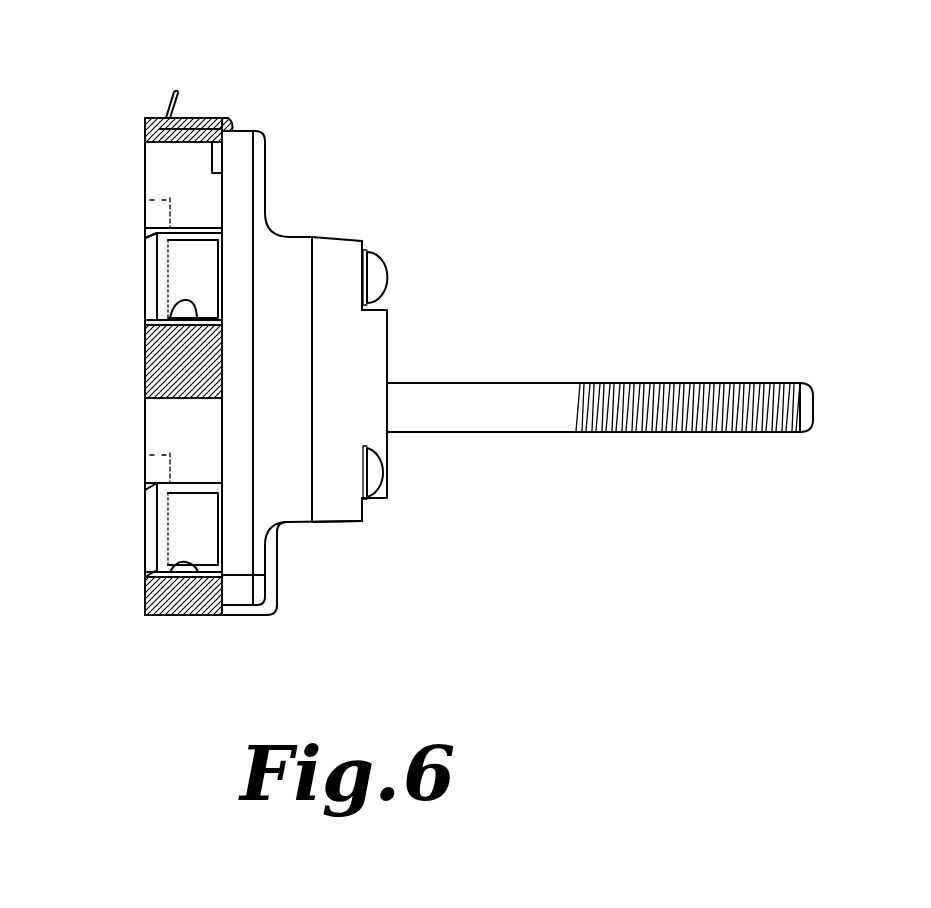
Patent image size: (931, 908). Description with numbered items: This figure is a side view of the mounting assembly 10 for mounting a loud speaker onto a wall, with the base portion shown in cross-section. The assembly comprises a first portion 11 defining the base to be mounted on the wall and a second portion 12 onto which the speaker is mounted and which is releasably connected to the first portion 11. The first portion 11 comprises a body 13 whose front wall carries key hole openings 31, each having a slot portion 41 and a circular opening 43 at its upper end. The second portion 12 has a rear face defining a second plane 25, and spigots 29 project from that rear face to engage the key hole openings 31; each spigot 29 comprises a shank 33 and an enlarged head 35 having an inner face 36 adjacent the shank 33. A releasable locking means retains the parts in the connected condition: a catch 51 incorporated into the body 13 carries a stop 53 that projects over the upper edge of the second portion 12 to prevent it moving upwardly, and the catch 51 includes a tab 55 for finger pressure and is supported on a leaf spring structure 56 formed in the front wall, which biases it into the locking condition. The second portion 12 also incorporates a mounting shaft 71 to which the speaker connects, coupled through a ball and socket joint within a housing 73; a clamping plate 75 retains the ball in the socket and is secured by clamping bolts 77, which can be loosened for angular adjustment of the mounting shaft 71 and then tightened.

The mounting assembly 10 is at (200, 100).
The first portion 11 is at (203, 617).
The second portion 12 is at (280, 580).
The body 13 is at (142, 600).
The second plane 25 is at (267, 167).
The spigot 29 is at (152, 263).
The key hole opening 31 is at (195, 318).
The shank 33 is at (180, 253).
The head 35 is at (152, 310).
The inner face 36 is at (170, 518).
The slot portion 41 is at (195, 570).
The circular opening 43 is at (195, 197).
The catch 51 is at (208, 118).
The stop 53 is at (232, 119).
The tab 55 is at (172, 92).
The leaf spring structure 56 is at (213, 153).
The mounting shaft 71 is at (550, 383).
The housing 73 is at (350, 238).
The clamping plate 75 is at (302, 236).
The clamping bolt 77 is at (389, 277).